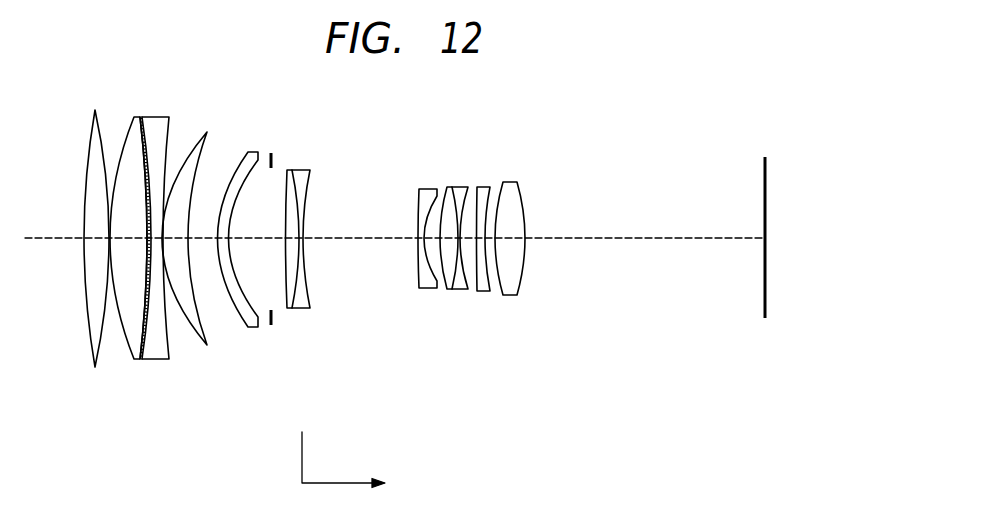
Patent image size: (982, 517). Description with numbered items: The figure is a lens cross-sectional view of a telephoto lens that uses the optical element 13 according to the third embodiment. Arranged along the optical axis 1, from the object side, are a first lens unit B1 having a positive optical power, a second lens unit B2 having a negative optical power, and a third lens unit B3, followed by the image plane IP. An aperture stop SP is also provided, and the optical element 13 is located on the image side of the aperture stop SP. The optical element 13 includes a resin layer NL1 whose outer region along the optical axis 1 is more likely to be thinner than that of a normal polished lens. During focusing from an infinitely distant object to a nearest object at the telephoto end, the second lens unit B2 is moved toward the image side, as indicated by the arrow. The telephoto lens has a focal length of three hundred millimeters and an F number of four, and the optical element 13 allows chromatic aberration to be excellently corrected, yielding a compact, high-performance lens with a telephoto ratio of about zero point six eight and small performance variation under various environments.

The optical axis 1 is at (56, 239).
The optical element 13 is at (178, 210).
The resin layer NL1 is at (145, 154).
The aperture stop SP is at (275, 153).
The image plane IP is at (764, 173).
The first lens unit B1 is at (175, 243).
The second lens unit B2 is at (326, 381).
The third lens unit B3 is at (529, 381).